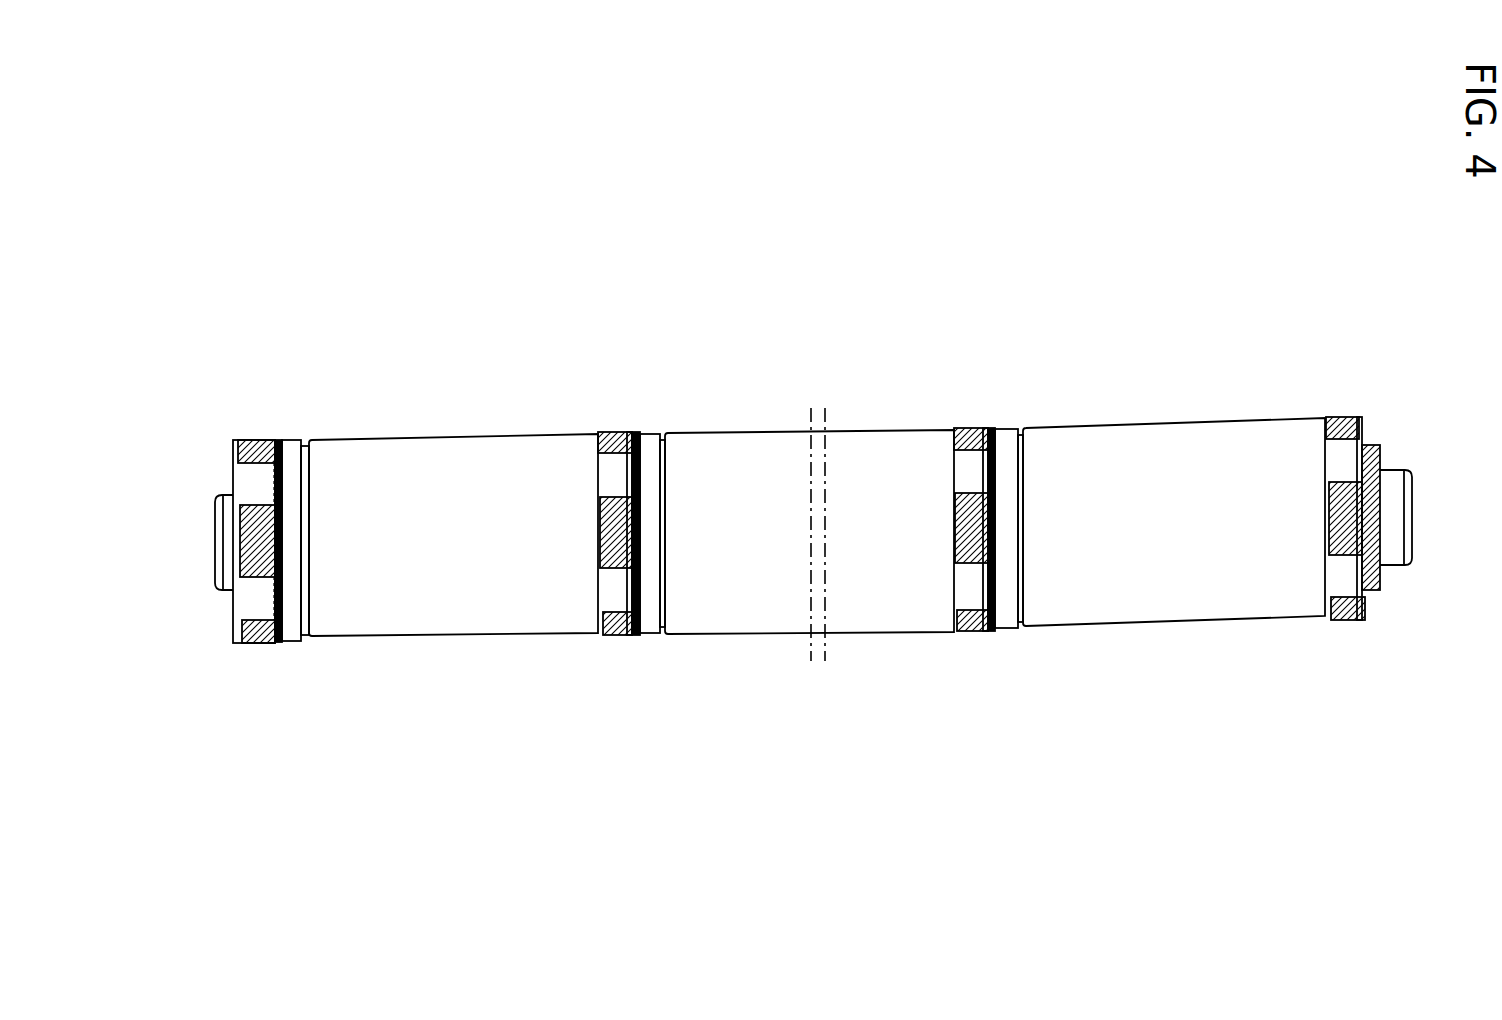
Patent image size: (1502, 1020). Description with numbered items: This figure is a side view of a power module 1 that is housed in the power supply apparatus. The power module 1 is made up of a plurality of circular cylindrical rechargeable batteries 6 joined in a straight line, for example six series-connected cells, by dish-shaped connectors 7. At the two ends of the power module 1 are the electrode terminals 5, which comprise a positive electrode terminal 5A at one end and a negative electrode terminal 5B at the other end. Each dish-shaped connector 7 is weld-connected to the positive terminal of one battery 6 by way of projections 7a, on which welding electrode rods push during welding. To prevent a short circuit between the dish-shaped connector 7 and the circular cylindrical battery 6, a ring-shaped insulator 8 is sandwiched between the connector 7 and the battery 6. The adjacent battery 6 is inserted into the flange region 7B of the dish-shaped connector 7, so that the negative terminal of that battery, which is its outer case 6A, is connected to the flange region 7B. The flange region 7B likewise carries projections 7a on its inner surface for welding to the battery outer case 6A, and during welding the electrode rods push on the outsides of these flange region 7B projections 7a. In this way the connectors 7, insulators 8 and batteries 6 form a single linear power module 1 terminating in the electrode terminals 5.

The power module 1 is at (745, 330).
The electrode terminals 5 is at (799, 512).
The positive electrode terminal 5A is at (217, 556).
The negative electrode terminal 5B is at (1407, 533).
The rechargeable battery 6 is at (817, 570).
The outer case 6A is at (488, 594).
The dish-shaped connector 7 is at (801, 513).
The projections 7a is at (280, 530).
The flange region 7B is at (258, 567).
The ring-shaped insulator 8 is at (293, 452).